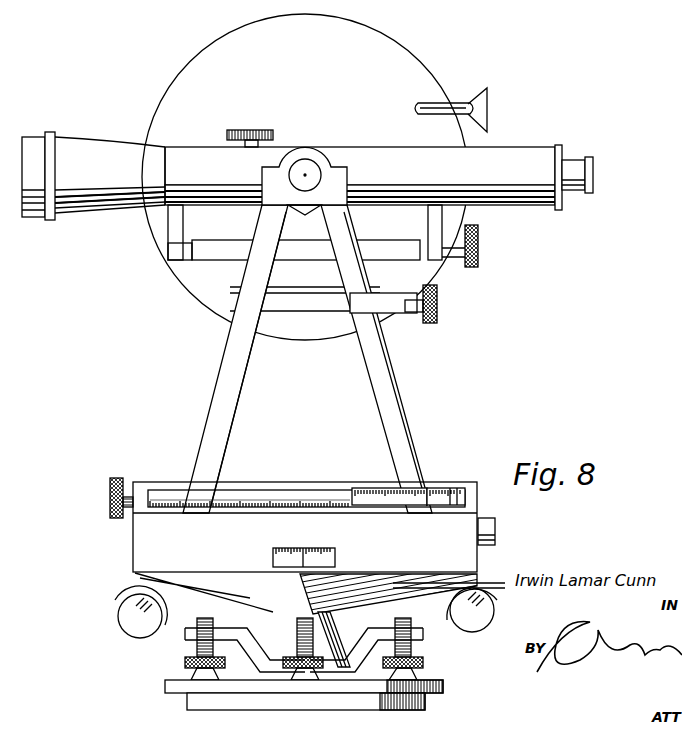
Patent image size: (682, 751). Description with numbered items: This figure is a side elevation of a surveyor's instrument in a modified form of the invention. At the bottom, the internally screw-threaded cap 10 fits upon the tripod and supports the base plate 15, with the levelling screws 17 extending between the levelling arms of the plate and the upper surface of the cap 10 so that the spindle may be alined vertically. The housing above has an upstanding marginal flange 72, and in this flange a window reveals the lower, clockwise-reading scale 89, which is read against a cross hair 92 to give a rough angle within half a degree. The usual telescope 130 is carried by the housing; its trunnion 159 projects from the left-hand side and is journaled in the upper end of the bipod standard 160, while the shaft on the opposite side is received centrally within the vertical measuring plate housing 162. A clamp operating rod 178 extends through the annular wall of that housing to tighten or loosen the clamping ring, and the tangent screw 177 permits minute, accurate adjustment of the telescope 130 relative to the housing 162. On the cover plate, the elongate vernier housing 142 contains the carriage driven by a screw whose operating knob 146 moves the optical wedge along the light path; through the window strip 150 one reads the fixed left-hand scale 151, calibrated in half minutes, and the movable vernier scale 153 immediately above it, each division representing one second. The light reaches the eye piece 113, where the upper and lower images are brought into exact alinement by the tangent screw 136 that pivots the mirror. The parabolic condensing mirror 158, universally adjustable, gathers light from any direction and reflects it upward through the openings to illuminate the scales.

The measuring plate housing 162 is at (390, 48).
The clamp operating rod 178 is at (430, 103).
The telescope 130 is at (490, 158).
The trunnion 159 is at (306, 162).
The tangent screw 136 is at (478, 242).
The tangent screw 177 is at (437, 292).
The bipod standard 160 is at (378, 360).
The operating knob 146 is at (117, 478).
The vernier housing 142 is at (160, 490).
The left-hand fixed scale 151 is at (262, 500).
The window strip 150 is at (318, 488).
The left-hand movable vernier scale 153 is at (435, 493).
The marginal flange 72 is at (133, 539).
The cross hair 92 is at (302, 550).
The lower scale 89 is at (335, 555).
The eye piece 113 is at (495, 525).
The parabolic condensing mirror 158 is at (125, 612).
The supporting plate 15 is at (348, 662).
The levelling screws 17 is at (195, 648).
The cap 10 is at (425, 701).